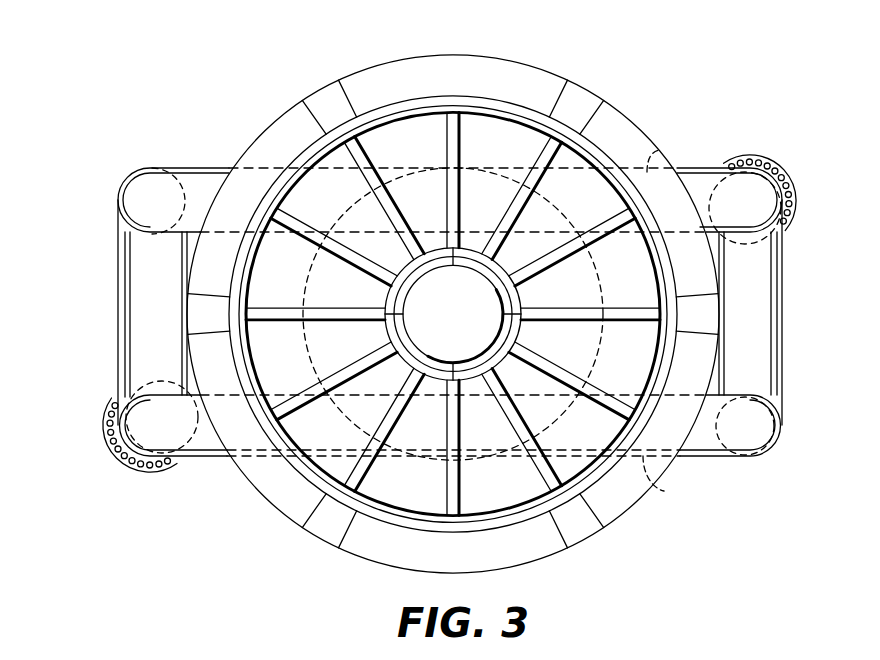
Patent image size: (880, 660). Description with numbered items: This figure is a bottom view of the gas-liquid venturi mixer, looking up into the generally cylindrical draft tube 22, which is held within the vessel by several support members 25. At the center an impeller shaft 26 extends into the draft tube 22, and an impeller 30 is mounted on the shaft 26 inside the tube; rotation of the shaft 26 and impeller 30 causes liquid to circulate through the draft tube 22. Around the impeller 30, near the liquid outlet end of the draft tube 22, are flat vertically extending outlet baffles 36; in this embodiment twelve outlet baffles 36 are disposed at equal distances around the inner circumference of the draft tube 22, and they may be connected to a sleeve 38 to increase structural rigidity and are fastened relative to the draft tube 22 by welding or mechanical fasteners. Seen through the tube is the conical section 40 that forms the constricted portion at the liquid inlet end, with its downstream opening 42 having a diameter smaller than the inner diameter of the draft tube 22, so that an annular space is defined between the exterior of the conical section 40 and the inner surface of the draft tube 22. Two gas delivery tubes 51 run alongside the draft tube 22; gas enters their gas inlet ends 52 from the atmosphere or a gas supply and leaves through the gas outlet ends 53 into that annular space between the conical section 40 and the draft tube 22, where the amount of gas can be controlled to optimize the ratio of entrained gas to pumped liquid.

The draft tube 22 is at (453, 314).
The support members 25 is at (453, 302).
The impeller shaft 26 is at (498, 313).
The impeller 30 is at (453, 267).
The outlet baffles 36 is at (436, 313).
The sleeve 38 is at (453, 354).
The conical section 40 is at (453, 280).
The downstream opening 42 is at (453, 291).
The gas delivery tubes 51 is at (781, 427).
The gas inlet ends 52 is at (780, 173).
The gas outlet ends 53 is at (660, 150).